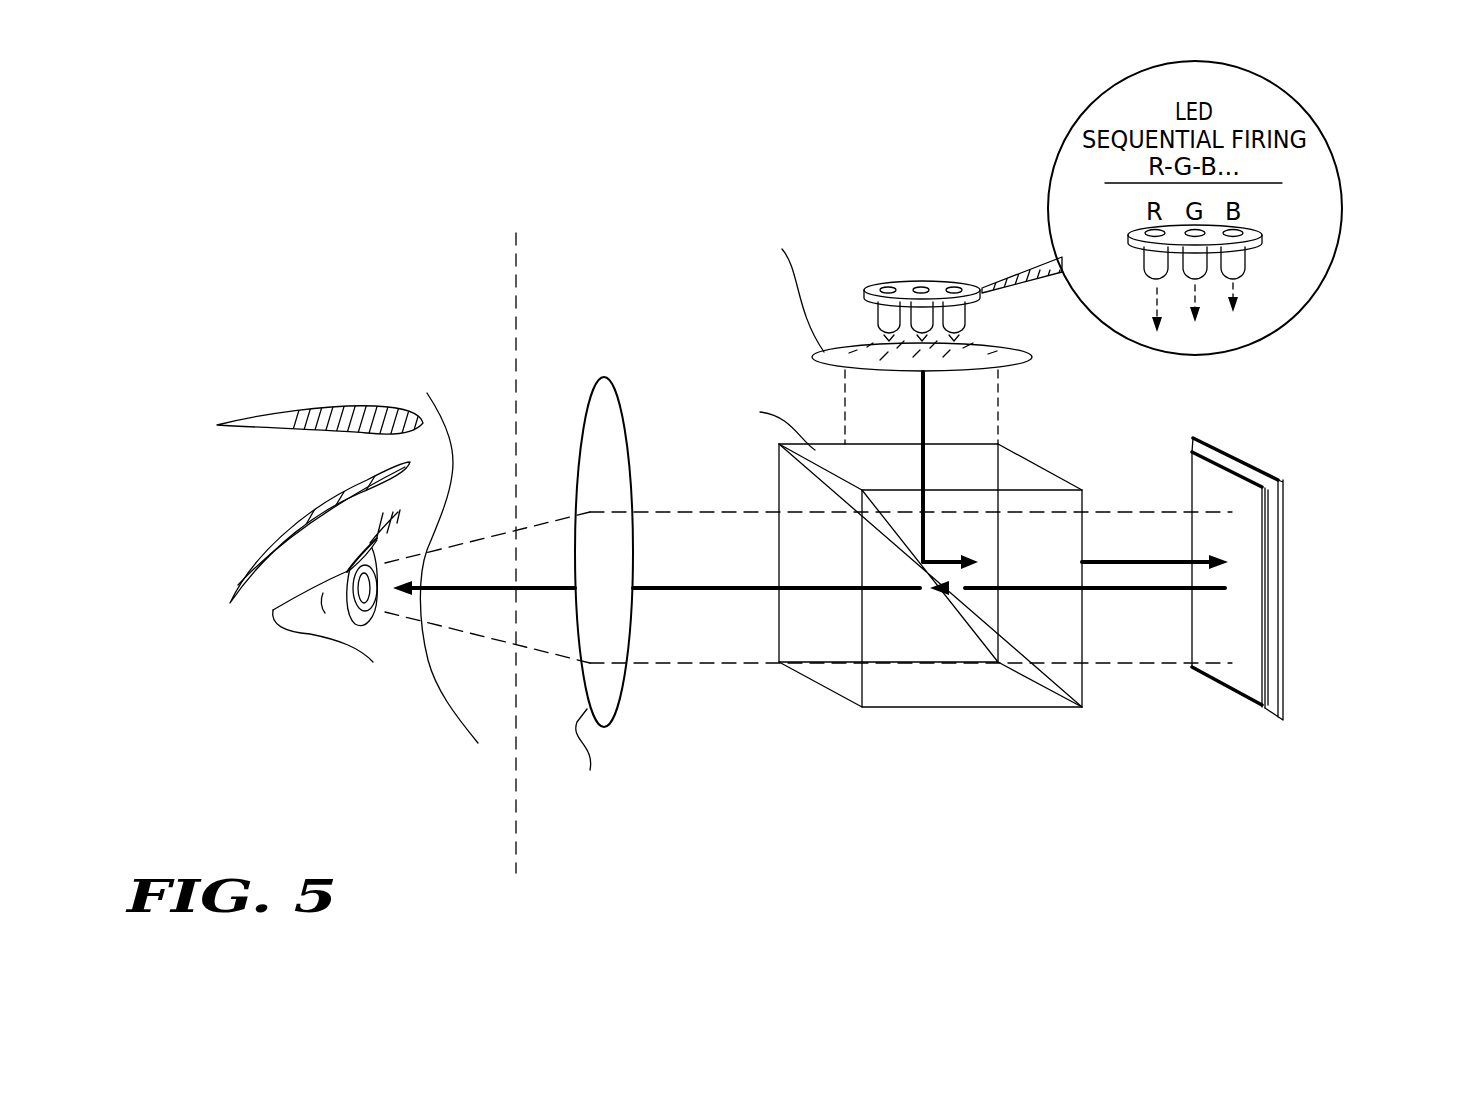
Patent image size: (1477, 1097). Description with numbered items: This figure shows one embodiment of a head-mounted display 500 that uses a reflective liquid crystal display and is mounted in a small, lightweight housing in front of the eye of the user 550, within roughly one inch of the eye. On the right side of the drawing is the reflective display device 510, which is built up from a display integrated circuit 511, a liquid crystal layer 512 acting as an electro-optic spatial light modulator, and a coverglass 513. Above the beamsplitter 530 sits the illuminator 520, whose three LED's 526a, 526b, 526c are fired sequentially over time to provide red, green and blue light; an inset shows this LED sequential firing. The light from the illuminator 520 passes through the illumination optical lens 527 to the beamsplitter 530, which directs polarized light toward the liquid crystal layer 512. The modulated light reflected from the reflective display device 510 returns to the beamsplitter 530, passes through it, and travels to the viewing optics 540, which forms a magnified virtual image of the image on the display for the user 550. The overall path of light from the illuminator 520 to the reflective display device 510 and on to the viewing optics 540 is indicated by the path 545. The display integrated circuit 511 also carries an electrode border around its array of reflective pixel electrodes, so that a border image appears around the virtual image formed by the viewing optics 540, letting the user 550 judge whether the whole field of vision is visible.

The head-mounted display 500 is at (591, 131).
The reflective display device 510 is at (1317, 588).
The display integrated circuit 511 is at (1227, 450).
The liquid crystal layer 512 is at (1265, 532).
The coverglass 513 is at (1253, 693).
The illuminator 520 is at (955, 264).
The LED 526a is at (1143, 261).
The LED 526b is at (1207, 277).
The LED 526c is at (1245, 262).
The illumination optical lens 527 is at (1032, 357).
The beamsplitter 530 is at (1052, 685).
The viewing optics 540 is at (588, 392).
The path 545 is at (927, 408).
The user 550 is at (347, 570).